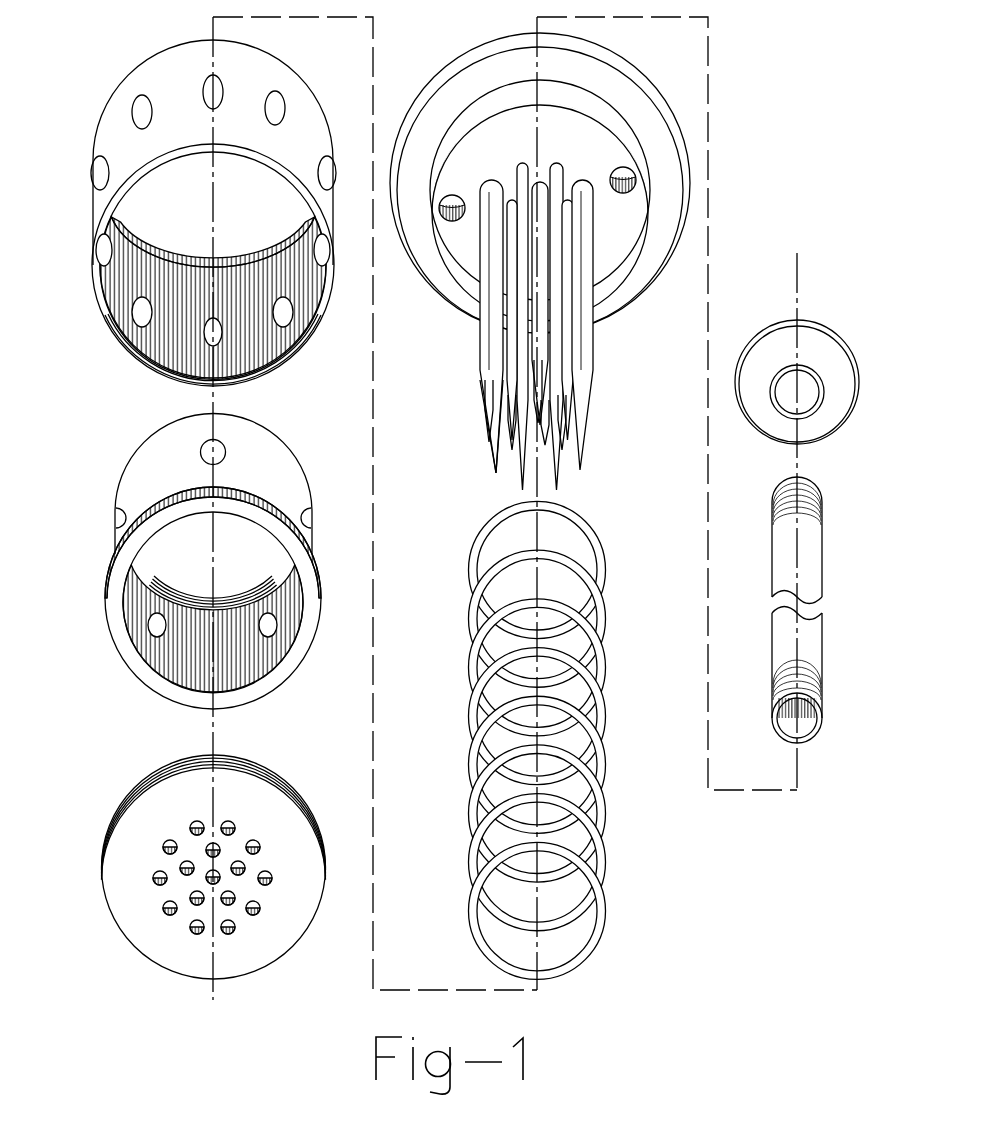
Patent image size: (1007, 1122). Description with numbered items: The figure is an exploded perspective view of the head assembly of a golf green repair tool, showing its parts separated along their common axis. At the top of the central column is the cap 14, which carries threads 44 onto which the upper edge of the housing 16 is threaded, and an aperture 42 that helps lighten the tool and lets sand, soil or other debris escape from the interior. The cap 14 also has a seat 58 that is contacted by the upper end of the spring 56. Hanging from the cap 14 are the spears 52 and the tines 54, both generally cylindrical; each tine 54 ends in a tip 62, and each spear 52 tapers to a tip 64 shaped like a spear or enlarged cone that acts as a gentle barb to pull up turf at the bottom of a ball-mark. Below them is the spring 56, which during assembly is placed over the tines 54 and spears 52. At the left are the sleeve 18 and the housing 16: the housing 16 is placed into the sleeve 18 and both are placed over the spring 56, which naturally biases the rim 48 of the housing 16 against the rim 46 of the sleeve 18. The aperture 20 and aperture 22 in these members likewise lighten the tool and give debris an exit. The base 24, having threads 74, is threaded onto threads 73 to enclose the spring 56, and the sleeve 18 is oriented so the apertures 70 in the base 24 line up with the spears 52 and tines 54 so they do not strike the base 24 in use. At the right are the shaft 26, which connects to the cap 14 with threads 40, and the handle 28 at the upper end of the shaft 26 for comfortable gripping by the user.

The cap 14 is at (660, 232).
The housing 16 is at (257, 472).
The sleeve 18 is at (298, 33).
The aperture 20 is at (122, 517).
The aperture 22 is at (141, 111).
The base 24 is at (275, 908).
The shaft 26 is at (783, 643).
The handle 28 is at (758, 402).
The threads 40 is at (783, 493).
The aperture 42 is at (452, 208).
The threads 44 is at (490, 100).
The rim 46 is at (135, 235).
The rim 48 is at (165, 687).
The spears 52 is at (565, 353).
The tines 54 is at (580, 317).
The spring 56 is at (597, 753).
The seat 58 is at (582, 128).
The tip 62 is at (497, 458).
The tip 64 is at (513, 403).
The apertures 70 is at (267, 880).
The threads 73 is at (170, 360).
The threads 74 is at (233, 763).